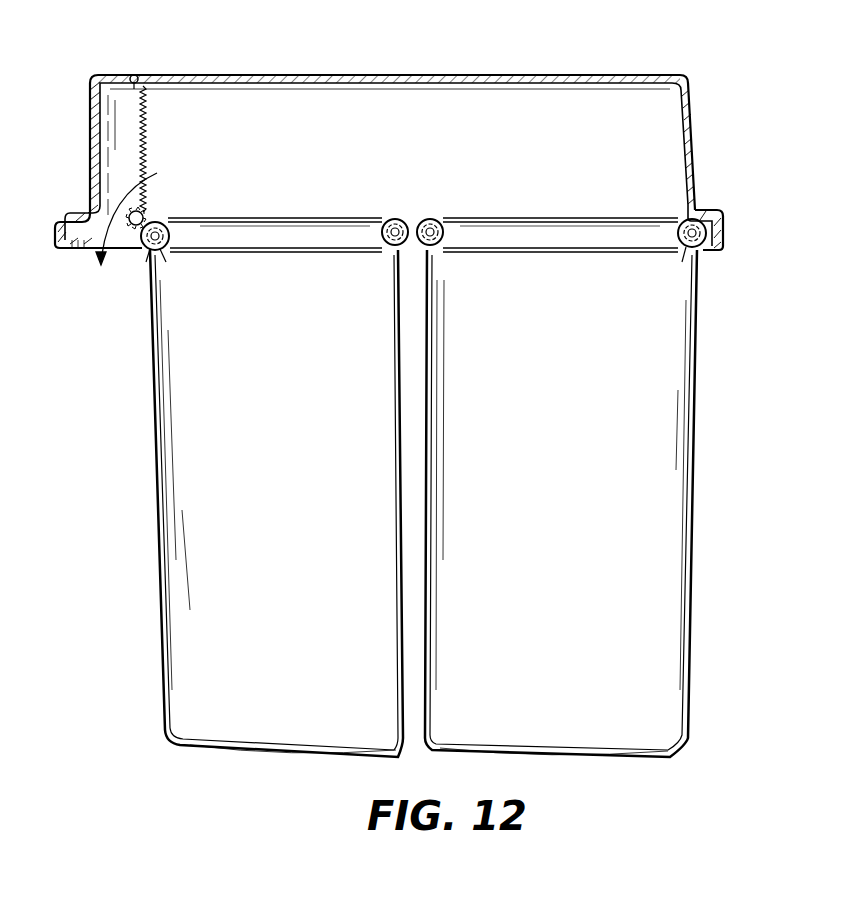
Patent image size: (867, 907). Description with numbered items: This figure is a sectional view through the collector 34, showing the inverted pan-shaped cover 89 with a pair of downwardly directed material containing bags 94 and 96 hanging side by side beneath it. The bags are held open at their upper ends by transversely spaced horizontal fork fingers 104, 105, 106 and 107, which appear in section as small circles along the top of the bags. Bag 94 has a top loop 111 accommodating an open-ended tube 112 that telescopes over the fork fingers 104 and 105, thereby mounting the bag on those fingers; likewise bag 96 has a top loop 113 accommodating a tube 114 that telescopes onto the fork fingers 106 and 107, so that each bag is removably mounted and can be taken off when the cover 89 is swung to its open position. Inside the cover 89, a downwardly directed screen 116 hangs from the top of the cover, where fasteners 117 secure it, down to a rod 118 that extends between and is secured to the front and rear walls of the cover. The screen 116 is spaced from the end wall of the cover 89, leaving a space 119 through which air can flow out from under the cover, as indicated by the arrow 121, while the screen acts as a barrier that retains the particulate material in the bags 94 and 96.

The collector 34 is at (703, 80).
The cover 89 is at (88, 102).
The space 119 is at (108, 150).
The fasteners 117 is at (131, 77).
The screen 116 is at (147, 130).
The rod 118 is at (141, 211).
The fork finger 104 is at (166, 226).
The fork finger 105 is at (392, 219).
The fork finger 106 is at (434, 219).
The fork finger 107 is at (680, 225).
The top loop 111 is at (142, 252).
The tube 112 is at (168, 250).
The top loop 113 is at (703, 250).
The tube 114 is at (680, 252).
The arrow 121 is at (94, 236).
The material containing bag 94 is at (156, 456).
The material containing bag 96 is at (692, 456).